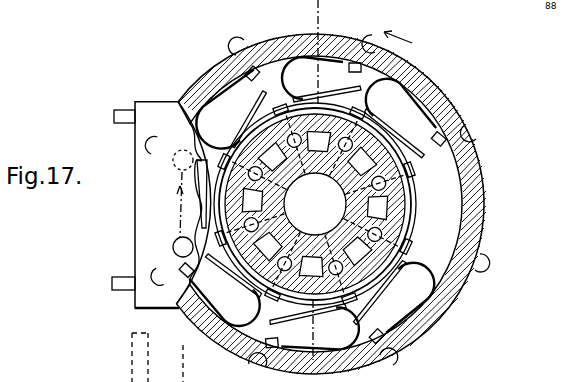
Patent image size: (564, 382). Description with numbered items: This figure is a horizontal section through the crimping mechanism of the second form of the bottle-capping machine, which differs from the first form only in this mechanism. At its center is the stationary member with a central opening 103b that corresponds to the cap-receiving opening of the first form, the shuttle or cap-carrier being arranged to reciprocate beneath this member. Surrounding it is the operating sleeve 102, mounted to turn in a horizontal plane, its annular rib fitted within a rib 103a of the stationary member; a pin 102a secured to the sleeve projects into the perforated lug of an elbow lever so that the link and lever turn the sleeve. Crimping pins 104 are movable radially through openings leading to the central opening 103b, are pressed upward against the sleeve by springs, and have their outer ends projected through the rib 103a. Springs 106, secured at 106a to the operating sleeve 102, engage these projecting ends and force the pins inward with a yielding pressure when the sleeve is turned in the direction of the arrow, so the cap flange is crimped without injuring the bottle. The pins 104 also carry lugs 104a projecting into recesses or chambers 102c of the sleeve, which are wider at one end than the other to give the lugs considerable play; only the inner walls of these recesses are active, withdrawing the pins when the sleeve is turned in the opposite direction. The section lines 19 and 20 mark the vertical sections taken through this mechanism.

The section line 19 is at (325, 25).
The section line 20 is at (384, 32).
The operating sleeve 102 is at (486, 188).
The pin 102a is at (173, 247).
The recesses or chambers 102c is at (395, 206).
The rib 103a is at (253, 127).
The central opening 103b is at (308, 228).
The crimping pins 104 is at (378, 290).
The lugs 104a is at (222, 287).
The springs 106 is at (387, 97).
The spring attachment point 106a is at (397, 350).